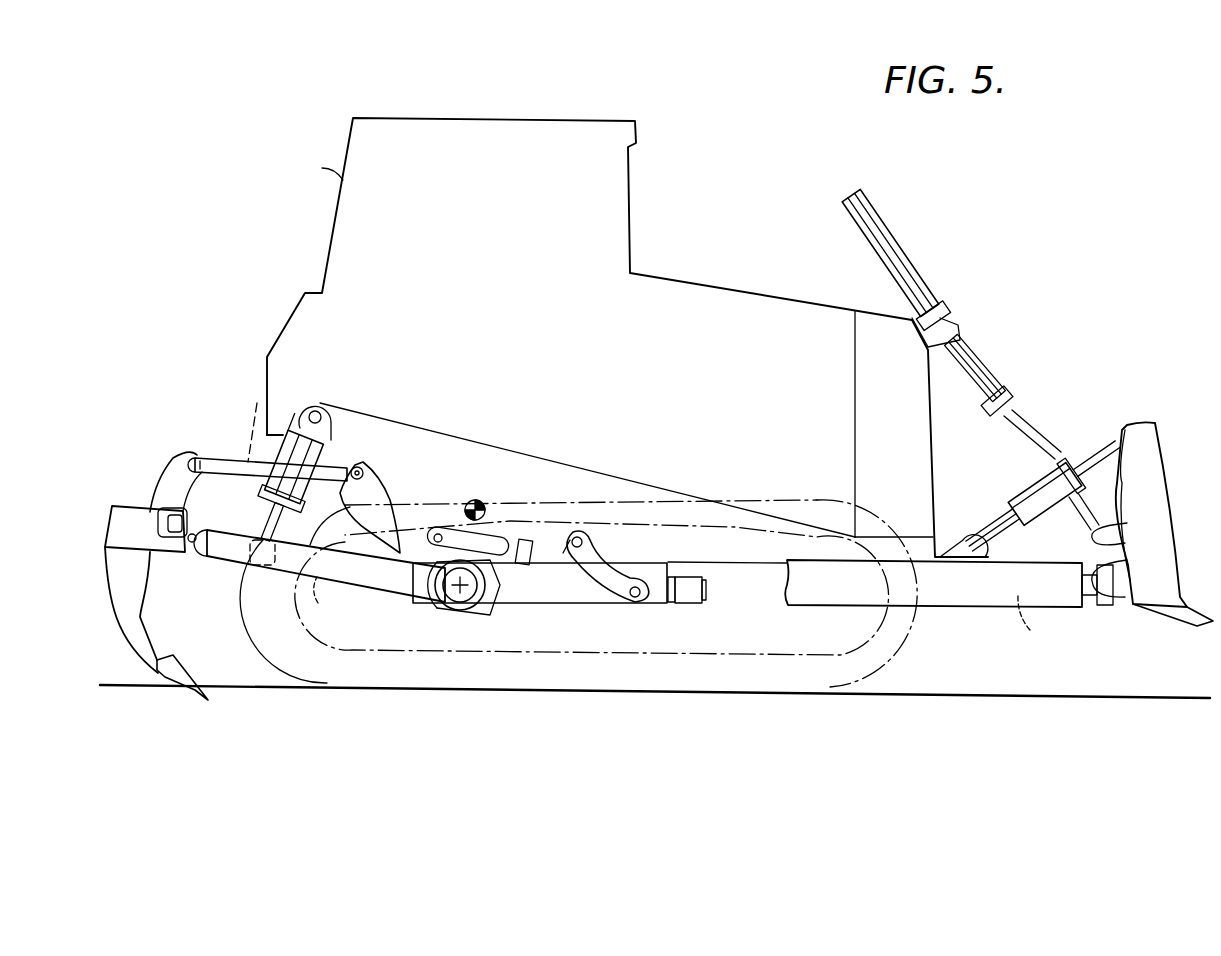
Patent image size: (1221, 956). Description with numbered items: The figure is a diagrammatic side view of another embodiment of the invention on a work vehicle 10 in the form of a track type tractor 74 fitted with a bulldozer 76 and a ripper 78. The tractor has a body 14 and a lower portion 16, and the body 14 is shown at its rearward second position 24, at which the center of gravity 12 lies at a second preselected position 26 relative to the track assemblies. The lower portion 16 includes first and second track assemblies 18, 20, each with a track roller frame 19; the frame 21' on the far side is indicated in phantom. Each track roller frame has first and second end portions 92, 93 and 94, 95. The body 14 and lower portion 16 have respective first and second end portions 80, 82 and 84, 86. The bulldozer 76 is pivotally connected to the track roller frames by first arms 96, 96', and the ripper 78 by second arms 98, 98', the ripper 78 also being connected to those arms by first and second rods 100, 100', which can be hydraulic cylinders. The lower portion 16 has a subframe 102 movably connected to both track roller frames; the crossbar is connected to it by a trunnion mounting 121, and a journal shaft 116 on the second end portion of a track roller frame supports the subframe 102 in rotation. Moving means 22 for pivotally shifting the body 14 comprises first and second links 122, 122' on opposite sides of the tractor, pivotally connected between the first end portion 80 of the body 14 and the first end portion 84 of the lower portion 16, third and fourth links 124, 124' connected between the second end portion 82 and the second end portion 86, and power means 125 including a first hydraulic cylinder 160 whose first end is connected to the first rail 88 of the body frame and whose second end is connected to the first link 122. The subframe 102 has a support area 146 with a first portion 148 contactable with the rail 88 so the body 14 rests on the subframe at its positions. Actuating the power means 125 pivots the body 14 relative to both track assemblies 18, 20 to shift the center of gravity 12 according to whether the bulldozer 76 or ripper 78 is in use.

The work vehicle 10 is at (672, 130).
The track type tractor 74 is at (693, 178).
The second position 24 is at (316, 170).
The body 14 is at (627, 337).
The second end portion of the body 82 is at (168, 417).
The first rod 100 is at (268, 443).
The second rod 100' is at (242, 421).
The power means 125 is at (349, 430).
The first rail 88 is at (327, 485).
The first hydraulic cylinder 160 is at (398, 487).
The center of gravity 12 is at (481, 477).
The moving means 22 is at (558, 474).
The second preselected position 26 is at (483, 499).
The first portion of the support area 148 is at (563, 552).
The third link 124 is at (488, 525).
The fourth link 124' is at (545, 542).
The support area 146 is at (581, 546).
The first link 122 is at (626, 560).
The second link 122' is at (666, 553).
The first end portion of the body 80 is at (980, 448).
The bulldozer 76 is at (1152, 524).
The ripper 78 is at (156, 576).
The second arm 98 is at (319, 566).
The second arm 98' is at (333, 600).
The journal shaft 116 is at (455, 594).
The subframe 102 is at (540, 593).
The trunnion mounting 121 is at (696, 588).
The first arm 96 is at (949, 583).
The first arm 96' is at (1041, 619).
The second track assembly 20 is at (261, 621).
The first track assembly 18 is at (271, 651).
The track roller frame 19 is at (572, 620).
The track roller 21' is at (588, 655).
The second end portion of the lower portion 86 is at (269, 696).
The second end portion of the track roller frame 93 is at (355, 638).
The first end portion of the track roller frame 94 is at (387, 641).
The lower portion 16 is at (418, 694).
The first end portion of the track roller frame 92 is at (708, 657).
The second end portion of the track roller frame 95 is at (735, 657).
The first end portion of the lower portion 84 is at (910, 647).